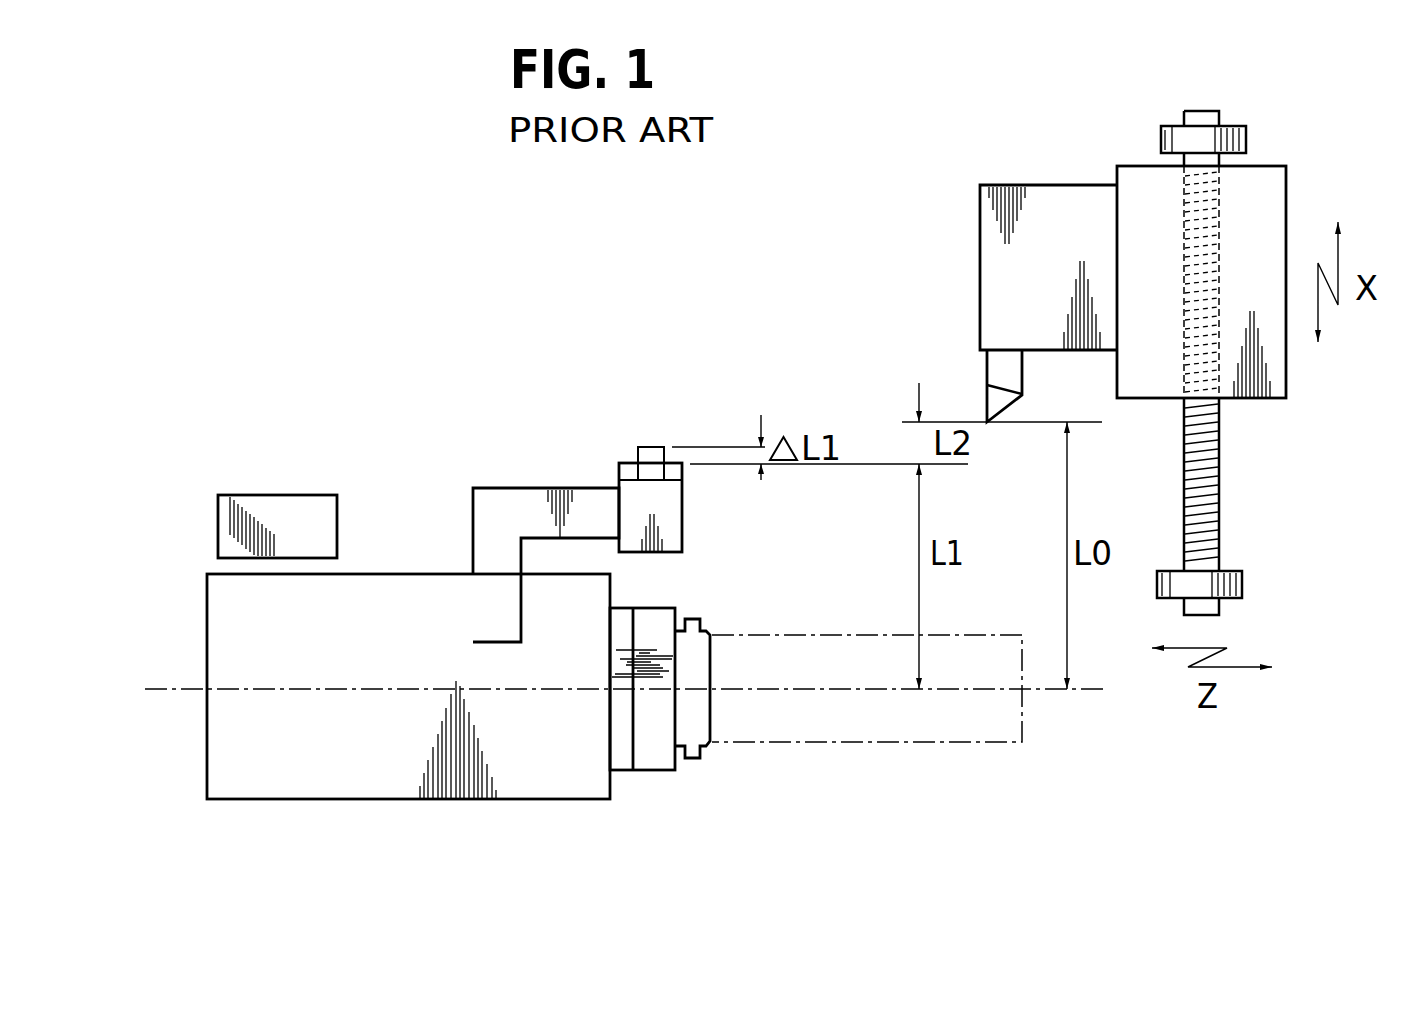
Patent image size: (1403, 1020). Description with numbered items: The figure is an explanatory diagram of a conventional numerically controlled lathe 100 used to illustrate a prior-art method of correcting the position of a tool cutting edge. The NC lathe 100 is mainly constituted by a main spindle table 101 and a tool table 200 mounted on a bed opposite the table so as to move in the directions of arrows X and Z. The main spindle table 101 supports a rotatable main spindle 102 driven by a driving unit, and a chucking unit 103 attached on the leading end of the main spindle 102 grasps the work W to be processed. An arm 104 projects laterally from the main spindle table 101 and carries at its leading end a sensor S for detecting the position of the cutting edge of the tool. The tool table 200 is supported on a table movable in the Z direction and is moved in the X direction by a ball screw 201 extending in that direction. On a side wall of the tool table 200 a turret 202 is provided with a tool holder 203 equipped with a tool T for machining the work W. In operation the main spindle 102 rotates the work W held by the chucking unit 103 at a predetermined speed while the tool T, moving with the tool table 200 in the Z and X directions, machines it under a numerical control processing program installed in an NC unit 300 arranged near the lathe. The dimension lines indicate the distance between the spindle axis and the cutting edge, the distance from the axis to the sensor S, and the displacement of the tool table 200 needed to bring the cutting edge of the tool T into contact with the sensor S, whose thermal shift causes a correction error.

The numerically controlled lathe 100 is at (710, 407).
The main spindle table 101 is at (355, 777).
The main spindle 102 is at (655, 758).
The chucking unit 103 is at (702, 738).
The arm 104 is at (502, 488).
The numerical control unit 300 is at (267, 495).
The tool table 200 is at (1288, 178).
The ball screw 201 is at (1218, 508).
The turret 202 is at (1016, 186).
The tool holder 203 is at (997, 370).
The sensor S is at (683, 533).
The tool T is at (988, 398).
The work W is at (917, 742).